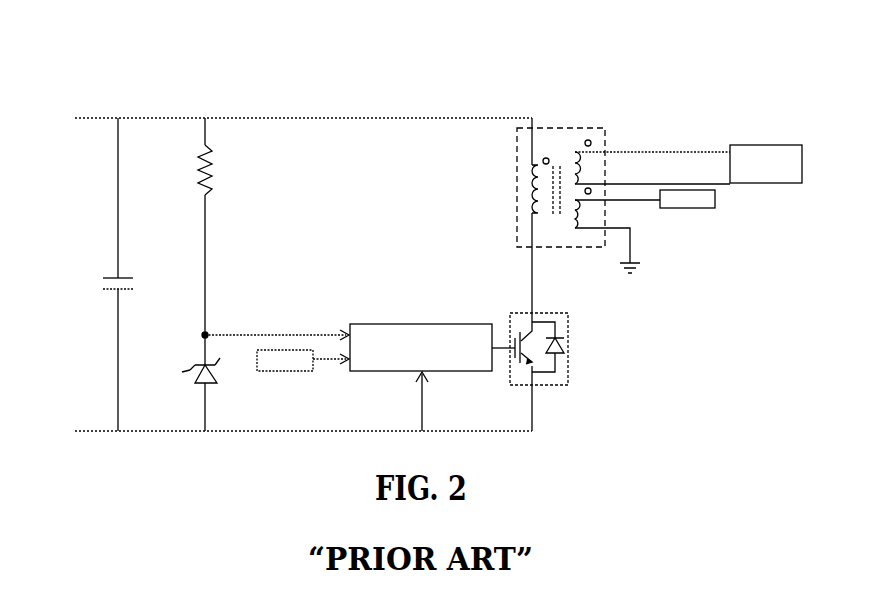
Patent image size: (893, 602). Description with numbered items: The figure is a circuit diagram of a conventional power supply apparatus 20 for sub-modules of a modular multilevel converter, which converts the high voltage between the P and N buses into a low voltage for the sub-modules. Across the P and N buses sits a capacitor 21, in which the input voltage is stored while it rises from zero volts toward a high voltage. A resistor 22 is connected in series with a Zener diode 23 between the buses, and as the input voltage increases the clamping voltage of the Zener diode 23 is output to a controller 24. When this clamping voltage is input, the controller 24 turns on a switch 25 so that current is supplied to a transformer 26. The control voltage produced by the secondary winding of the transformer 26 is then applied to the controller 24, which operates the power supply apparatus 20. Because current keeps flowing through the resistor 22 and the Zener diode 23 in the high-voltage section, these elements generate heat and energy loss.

The power supply apparatus 20 is at (298, 100).
The capacitor 21 is at (133, 277).
The resistor 22 is at (212, 166).
The Zener diode 23 is at (190, 384).
The controller 24 is at (430, 322).
The switching element (IGBT) 25 is at (569, 342).
The transformer 26 is at (560, 127).